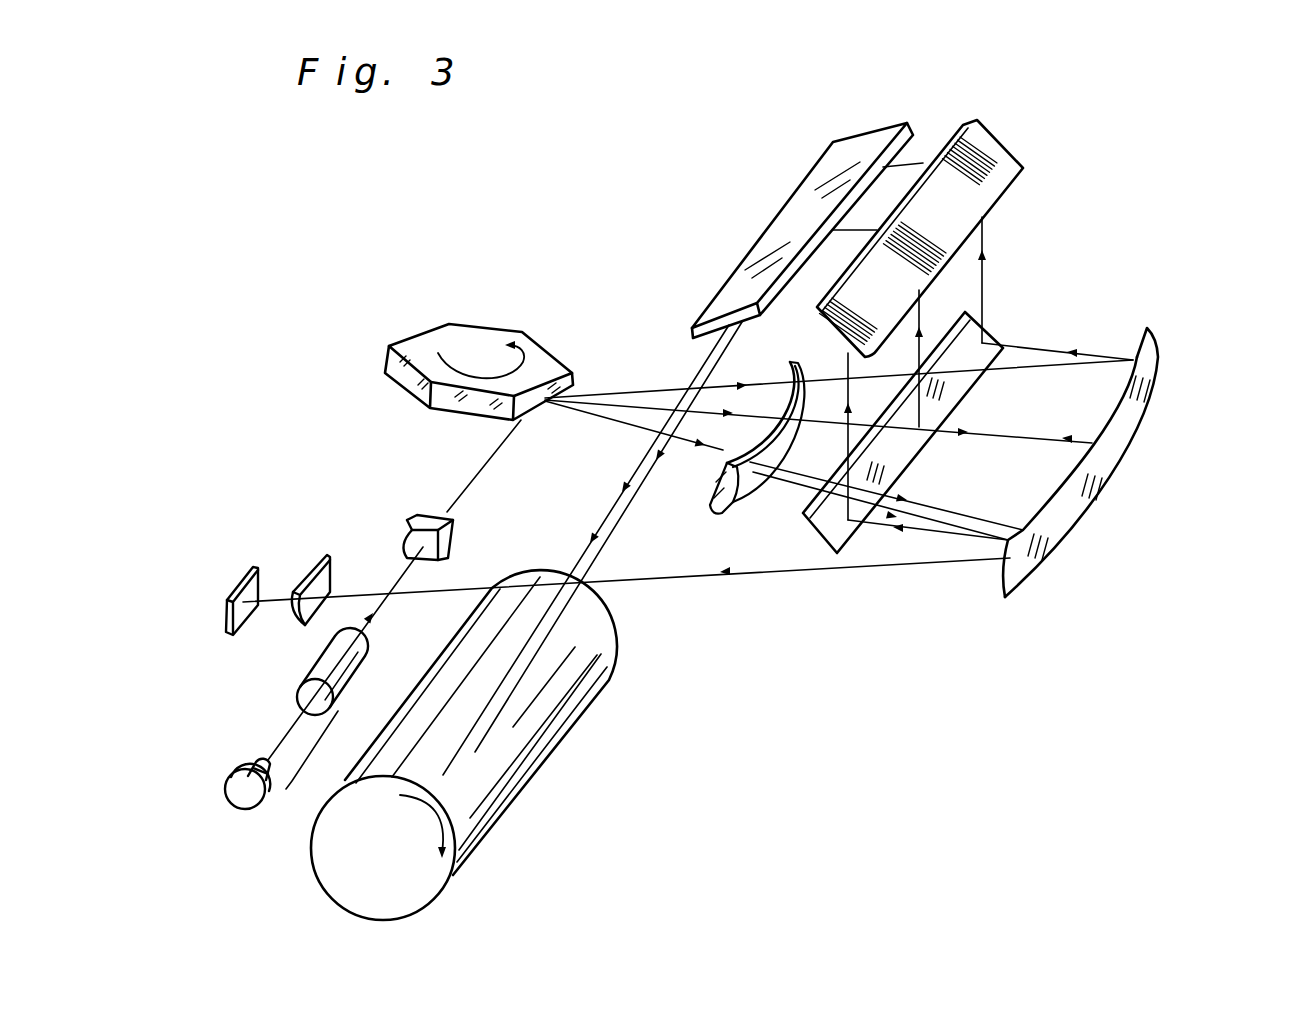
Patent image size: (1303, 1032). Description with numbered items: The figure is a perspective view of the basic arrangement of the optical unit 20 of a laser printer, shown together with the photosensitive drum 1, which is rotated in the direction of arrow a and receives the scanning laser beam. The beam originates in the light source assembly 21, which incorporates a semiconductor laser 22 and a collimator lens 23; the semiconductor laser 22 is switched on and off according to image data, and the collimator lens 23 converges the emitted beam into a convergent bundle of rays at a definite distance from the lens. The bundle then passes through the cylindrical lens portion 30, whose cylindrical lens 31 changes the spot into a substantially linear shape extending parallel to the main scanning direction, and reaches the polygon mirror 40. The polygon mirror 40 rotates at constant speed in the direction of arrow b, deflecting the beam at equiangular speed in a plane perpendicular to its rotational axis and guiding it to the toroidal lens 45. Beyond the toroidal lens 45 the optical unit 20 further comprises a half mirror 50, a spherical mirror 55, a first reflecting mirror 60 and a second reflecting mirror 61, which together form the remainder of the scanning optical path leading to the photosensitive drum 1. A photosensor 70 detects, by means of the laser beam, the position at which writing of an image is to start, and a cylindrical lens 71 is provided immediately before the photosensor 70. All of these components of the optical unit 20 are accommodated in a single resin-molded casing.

The photosensitive drum 1 is at (510, 767).
The optical unit 20 is at (626, 370).
The light source assembly 21 is at (272, 708).
The semiconductor laser 22 is at (235, 792).
The collimator lens 23 is at (300, 665).
The cylindrical lens portion 30 is at (370, 492).
The cylindrical lens 31 is at (412, 535).
The polygon mirror 40 is at (461, 337).
The toroidal lens 45 is at (745, 486).
The half mirror 50 is at (993, 332).
The spherical mirror 55 is at (1140, 397).
The first reflecting mirror 60 is at (1000, 143).
The second reflecting mirror 61 is at (785, 228).
The photosensor 70 is at (222, 624).
The cylindrical lens 71 is at (308, 578).